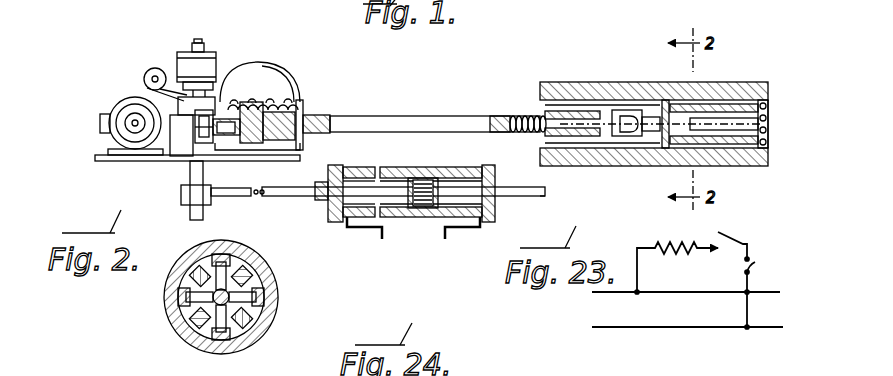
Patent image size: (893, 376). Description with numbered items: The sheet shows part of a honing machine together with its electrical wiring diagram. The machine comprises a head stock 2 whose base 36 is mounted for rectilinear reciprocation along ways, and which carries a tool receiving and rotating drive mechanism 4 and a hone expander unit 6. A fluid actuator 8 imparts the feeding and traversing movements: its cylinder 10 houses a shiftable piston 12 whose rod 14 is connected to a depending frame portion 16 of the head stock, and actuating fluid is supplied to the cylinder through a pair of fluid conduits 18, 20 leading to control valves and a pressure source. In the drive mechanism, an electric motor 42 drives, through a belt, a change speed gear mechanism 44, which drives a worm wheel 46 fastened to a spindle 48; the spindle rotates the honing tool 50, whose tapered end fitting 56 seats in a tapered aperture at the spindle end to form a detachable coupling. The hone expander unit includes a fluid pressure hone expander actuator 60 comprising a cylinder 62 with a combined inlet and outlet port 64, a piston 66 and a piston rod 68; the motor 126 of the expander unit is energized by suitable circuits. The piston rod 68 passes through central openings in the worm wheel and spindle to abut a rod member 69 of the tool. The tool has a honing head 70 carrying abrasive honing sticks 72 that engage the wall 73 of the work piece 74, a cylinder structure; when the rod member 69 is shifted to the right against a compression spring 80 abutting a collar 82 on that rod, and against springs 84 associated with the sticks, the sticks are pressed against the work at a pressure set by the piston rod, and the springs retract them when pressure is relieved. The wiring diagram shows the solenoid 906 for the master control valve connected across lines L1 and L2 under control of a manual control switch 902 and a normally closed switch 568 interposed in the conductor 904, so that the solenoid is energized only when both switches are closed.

In FIG. 1, the head stock 2 is at (98, 110).
In FIG. 1, the base 36 is at (100, 162).
In FIG. 1, the electric motor 42 is at (125, 102).
In FIG. 1, the motor of the expander unit 126 is at (180, 62).
In FIG. 1, the piston 66 is at (212, 112).
In FIG. 1, the hone expander unit 6 is at (222, 50).
In FIG. 1, the combined inlet and outlet port 64 is at (178, 118).
In FIG. 1, the fluid pressure hone expander actuator 60 is at (202, 143).
In FIG. 1, the cylinder 62 is at (214, 140).
In FIG. 1, the piston rod 68 is at (235, 108).
In FIG. 1, the change speed gear mechanism 44 is at (258, 73).
In FIG. 1, the tool receiving and rotating drive mechanism 4 is at (302, 74).
In FIG. 1, the worm wheel 46 is at (258, 144).
In FIG. 1, the spindle 48 is at (296, 150).
In FIG. 1, the rod member 69 is at (302, 134).
In FIG. 1, the tapered end fitting 56 is at (304, 115).
In FIG. 1, the honing tool 50 is at (452, 106).
In FIG. 1, the collar 82 is at (510, 117).
In FIG. 1, the compression spring 80 is at (528, 117).
In FIG. 1, the work piece 74 is at (553, 82).
In FIG. 2, the work piece 74 is at (280, 309).
In FIG. 1, the honing head 70 is at (779, 108).
In FIG. 1, the wall 73 is at (582, 100).
In FIG. 1, the abrasive honing sticks 72 is at (722, 105).
In FIG. 2, the abrasive honing sticks 72 is at (177, 278).
In FIG. 1, the springs 84 is at (760, 125).
In FIG. 1, the depending frame portion 16 is at (205, 212).
In FIG. 1, the rod 14 is at (282, 196).
In FIG. 1, the fluid actuator 8 is at (519, 163).
In FIG. 1, the cylinder 10 is at (365, 167).
In FIG. 1, the piston 12 is at (426, 184).
In FIG. 1, the fluid conduit 18 is at (368, 230).
In FIG. 1, the fluid conduit 20 is at (463, 229).
In FIG. 23, the solenoid 906 is at (677, 253).
In FIG. 23, the manual control switch 902 is at (728, 232).
In FIG. 23, the switch 568 is at (754, 270).
In FIG. 23, the conductor 904 is at (753, 308).
In FIG. 23, the line 1 L1 is at (678, 293).
In FIG. 23, the line 2 L2 is at (679, 329).